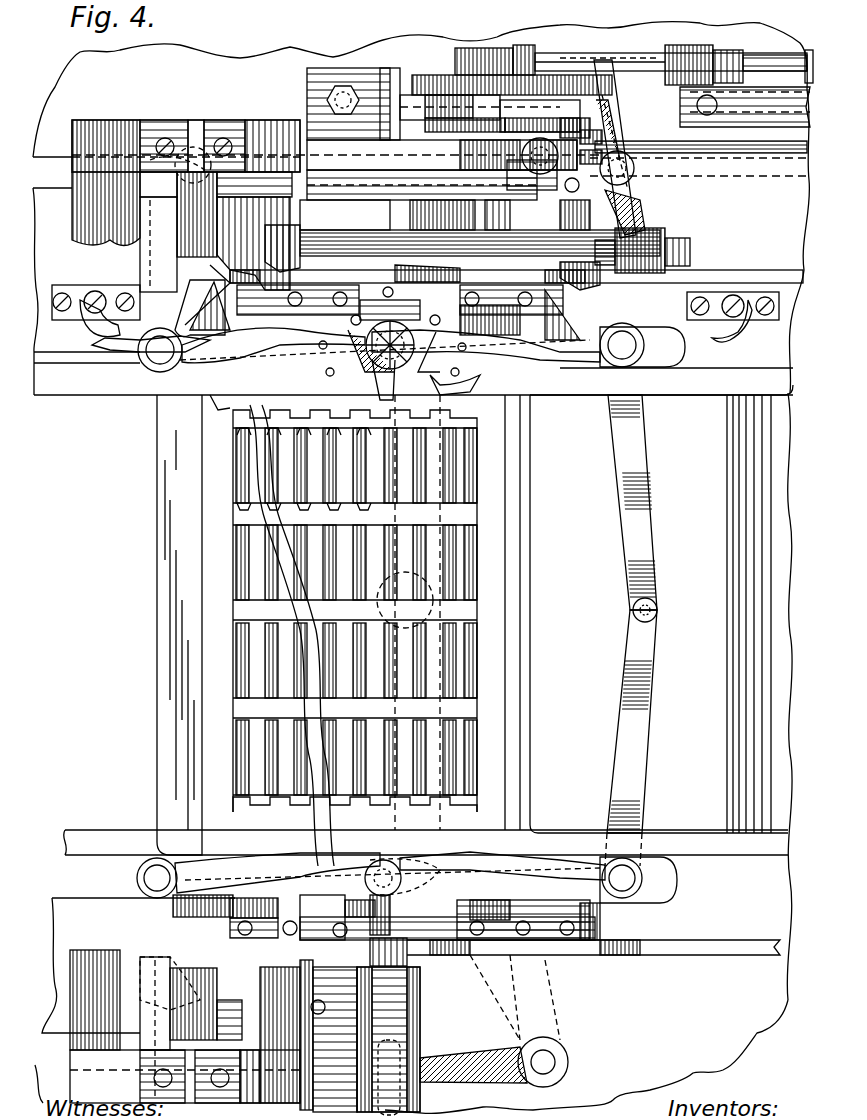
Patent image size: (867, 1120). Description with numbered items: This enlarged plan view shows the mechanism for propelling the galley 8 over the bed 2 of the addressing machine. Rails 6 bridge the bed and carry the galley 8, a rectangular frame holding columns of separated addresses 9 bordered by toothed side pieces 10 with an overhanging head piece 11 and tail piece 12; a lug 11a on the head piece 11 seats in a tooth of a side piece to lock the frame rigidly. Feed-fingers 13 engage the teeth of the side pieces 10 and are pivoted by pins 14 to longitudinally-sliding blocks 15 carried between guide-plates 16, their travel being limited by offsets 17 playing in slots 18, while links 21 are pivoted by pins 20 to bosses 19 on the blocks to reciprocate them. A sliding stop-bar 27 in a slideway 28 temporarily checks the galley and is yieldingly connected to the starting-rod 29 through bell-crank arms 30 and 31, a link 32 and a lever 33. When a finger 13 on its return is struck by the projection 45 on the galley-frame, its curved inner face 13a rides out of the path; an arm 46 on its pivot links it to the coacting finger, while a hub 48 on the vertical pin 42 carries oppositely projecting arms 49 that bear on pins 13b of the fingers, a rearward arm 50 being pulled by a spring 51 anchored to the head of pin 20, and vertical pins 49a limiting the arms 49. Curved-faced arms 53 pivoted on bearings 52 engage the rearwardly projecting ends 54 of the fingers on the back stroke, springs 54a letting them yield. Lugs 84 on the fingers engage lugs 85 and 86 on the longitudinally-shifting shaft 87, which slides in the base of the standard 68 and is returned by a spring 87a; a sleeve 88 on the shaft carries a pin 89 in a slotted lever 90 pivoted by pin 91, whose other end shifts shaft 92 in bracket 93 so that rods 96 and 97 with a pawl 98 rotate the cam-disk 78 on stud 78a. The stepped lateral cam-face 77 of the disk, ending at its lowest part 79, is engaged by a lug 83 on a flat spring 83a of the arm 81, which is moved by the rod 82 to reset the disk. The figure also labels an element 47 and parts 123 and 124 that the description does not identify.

The horizontal bed 2 is at (62, 908).
The rails 6 is at (138, 395).
The galley 8 is at (157, 533).
The columns of separated addresses 9 is at (440, 468).
The toothed side pieces 10 is at (355, 626).
The forward end piece 11 is at (202, 645).
The lug 11a is at (227, 391).
The end piece 12 is at (520, 612).
The feed-fingers 13 is at (185, 360).
The curved inner face 13a is at (467, 384).
The pin 13b is at (322, 350).
The pin 14 is at (155, 352).
The longitudinally-sliding blocks 15 is at (325, 930).
The guide-plates 16 is at (265, 926).
The offsets 17 is at (548, 905).
The slots 18 is at (210, 312).
The bosses 19 is at (395, 928).
The pins 20 is at (408, 955).
The links 21 is at (778, 280).
The sliding stop-bar 27 is at (420, 1010).
The slideway 28 is at (328, 1036).
The starting-rod 29 is at (638, 50).
The bell-crank arm 30 is at (488, 1052).
The bell-crank arm 31 is at (552, 972).
The link 32 is at (495, 997).
The lever 33 is at (430, 514).
The vertical pins 42 is at (390, 870).
The projection 45 is at (530, 410).
The arm 46 is at (640, 443).
The inclined arm lower portion 47 is at (624, 712).
The hub 48 is at (426, 380).
The arms 49 is at (372, 300).
The vertical pins 49a is at (395, 290).
The rearwardly-extending arm 50 is at (396, 322).
The spring 51 is at (405, 272).
The bearings 52 is at (118, 290).
The curved-faced arms 53 is at (92, 290).
The rearwardly-projecting ends 54 is at (100, 355).
The springs 54a is at (82, 328).
The standard 68 is at (400, 152).
The lateral cam-face 77 is at (420, 110).
The disk 78 is at (440, 95).
The stud 78a is at (518, 45).
The lowest part 79 is at (575, 125).
The arm 81 is at (600, 128).
The rod 82 is at (728, 158).
The lateral lug 83 is at (540, 125).
The flat spring 83a is at (543, 171).
The projecting lug 84 is at (200, 300).
The lug 85 is at (265, 262).
The lug 86 is at (595, 280).
The longitudinally-shifting shaft 87 is at (360, 243).
The spring 87a is at (380, 210).
The sleeve 88 is at (665, 258).
The pin 89 is at (645, 240).
The lever 90 is at (640, 205).
The pin 91 is at (635, 168).
The longitudinally-shifting shaft 92 is at (760, 58).
The bracket 93 is at (690, 112).
The rod 96 is at (533, 65).
The rod 97 is at (560, 70).
The pawl 98 is at (470, 48).
The clamp block 123 is at (270, 172).
The clamp jaw 124 is at (72, 225).